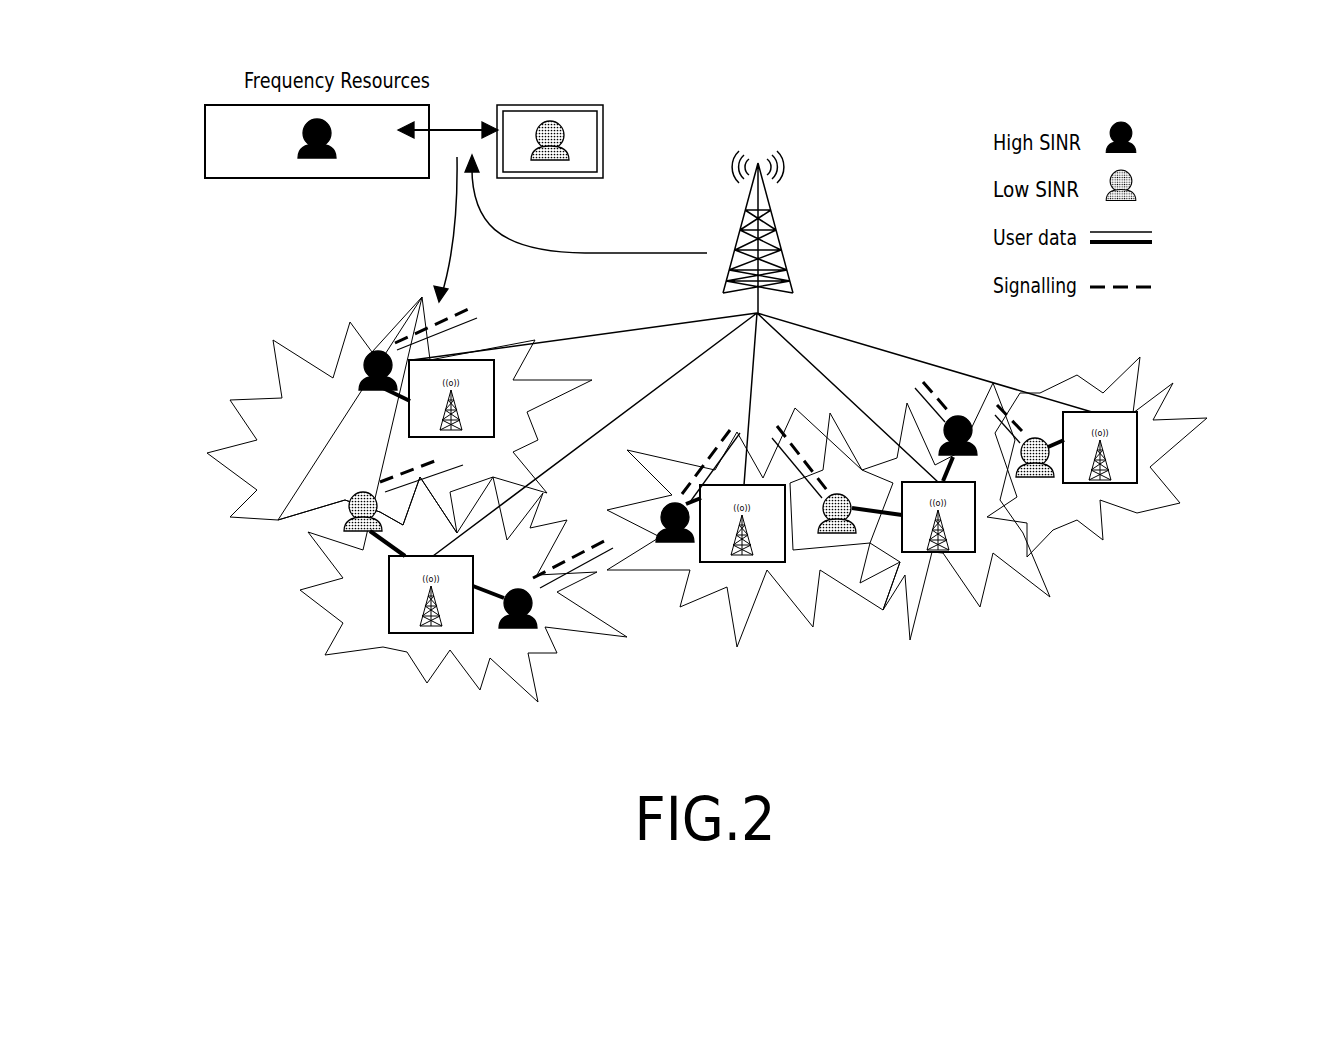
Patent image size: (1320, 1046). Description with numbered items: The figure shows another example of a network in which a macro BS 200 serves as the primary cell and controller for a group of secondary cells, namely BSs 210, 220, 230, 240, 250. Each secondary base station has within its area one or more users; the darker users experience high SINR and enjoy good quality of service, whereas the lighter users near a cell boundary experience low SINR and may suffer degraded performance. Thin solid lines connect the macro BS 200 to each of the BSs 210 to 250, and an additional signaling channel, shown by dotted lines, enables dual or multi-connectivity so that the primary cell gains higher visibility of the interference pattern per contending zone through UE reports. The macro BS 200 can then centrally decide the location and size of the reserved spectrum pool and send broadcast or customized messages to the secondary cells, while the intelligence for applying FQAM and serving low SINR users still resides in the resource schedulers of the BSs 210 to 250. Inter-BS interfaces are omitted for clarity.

The macro BS 200 is at (812, 155).
The BS 210 is at (396, 419).
The BS 220 is at (397, 642).
The BS 230 is at (787, 578).
The BS 240 is at (981, 563).
The BS 250 is at (1134, 457).